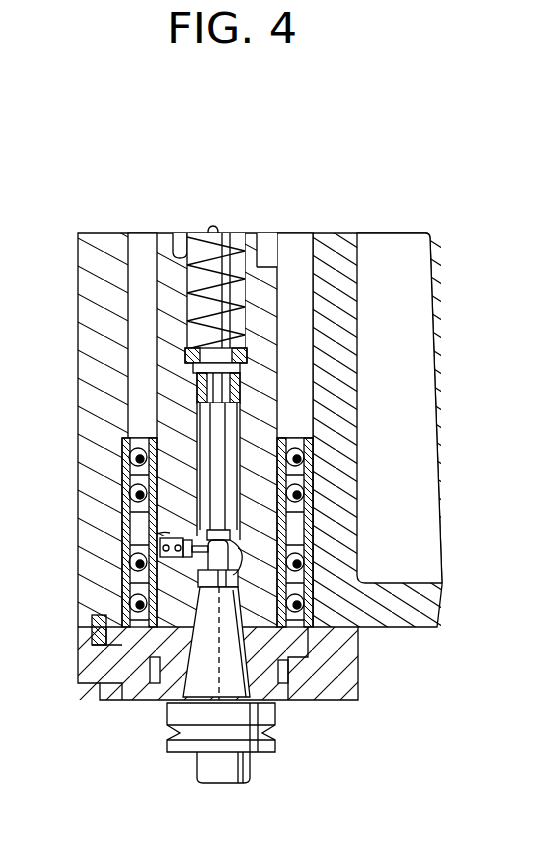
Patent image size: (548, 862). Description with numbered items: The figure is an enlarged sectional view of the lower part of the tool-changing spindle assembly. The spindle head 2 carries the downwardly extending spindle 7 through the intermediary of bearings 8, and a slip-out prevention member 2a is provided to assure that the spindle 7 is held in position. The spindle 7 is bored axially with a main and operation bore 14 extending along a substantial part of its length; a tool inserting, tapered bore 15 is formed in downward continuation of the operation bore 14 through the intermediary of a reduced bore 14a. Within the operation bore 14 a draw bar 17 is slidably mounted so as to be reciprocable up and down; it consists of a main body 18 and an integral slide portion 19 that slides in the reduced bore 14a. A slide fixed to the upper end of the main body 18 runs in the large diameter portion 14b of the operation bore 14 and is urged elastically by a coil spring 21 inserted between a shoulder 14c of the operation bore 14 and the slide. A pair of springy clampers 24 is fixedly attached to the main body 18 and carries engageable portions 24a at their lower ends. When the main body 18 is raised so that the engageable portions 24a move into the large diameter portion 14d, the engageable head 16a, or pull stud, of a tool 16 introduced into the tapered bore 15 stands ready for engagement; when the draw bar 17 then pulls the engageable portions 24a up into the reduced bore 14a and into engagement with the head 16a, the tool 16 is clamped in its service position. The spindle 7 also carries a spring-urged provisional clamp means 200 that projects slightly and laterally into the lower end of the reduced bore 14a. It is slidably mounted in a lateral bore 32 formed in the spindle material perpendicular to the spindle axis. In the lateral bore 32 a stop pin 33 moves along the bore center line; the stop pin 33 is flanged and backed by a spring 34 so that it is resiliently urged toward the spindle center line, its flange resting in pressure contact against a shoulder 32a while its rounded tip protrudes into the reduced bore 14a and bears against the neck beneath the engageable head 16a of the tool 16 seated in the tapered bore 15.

The spindle head 2 is at (357, 305).
The slip-out prevention member 2a is at (113, 687).
The spindle 7 is at (345, 400).
The bearings 8 is at (320, 628).
The main and operation bore 14 is at (128, 262).
The reduced bore 14a is at (200, 427).
The large diameter portion of operation bore 14b is at (178, 247).
The shoulder of operation bore 14c is at (185, 352).
The large diameter portion of operation bore 14d is at (310, 558).
The tool inserting tapered bore 15 is at (193, 680).
The tool 16 is at (210, 783).
The engageable head 16a is at (305, 485).
The draw bar 17 is at (246, 262).
The main body 18 is at (212, 231).
The slide portion 19 is at (342, 368).
The coil spring 21 is at (128, 310).
The springy clampers 24 is at (128, 478).
The engageable portions 24a is at (300, 533).
The lateral bore 32 is at (160, 548).
The shoulder 32a is at (150, 545).
The stop pin 33 is at (195, 555).
The spring 34 is at (165, 560).
The spring-urged provisional clamp means 200 is at (160, 697).